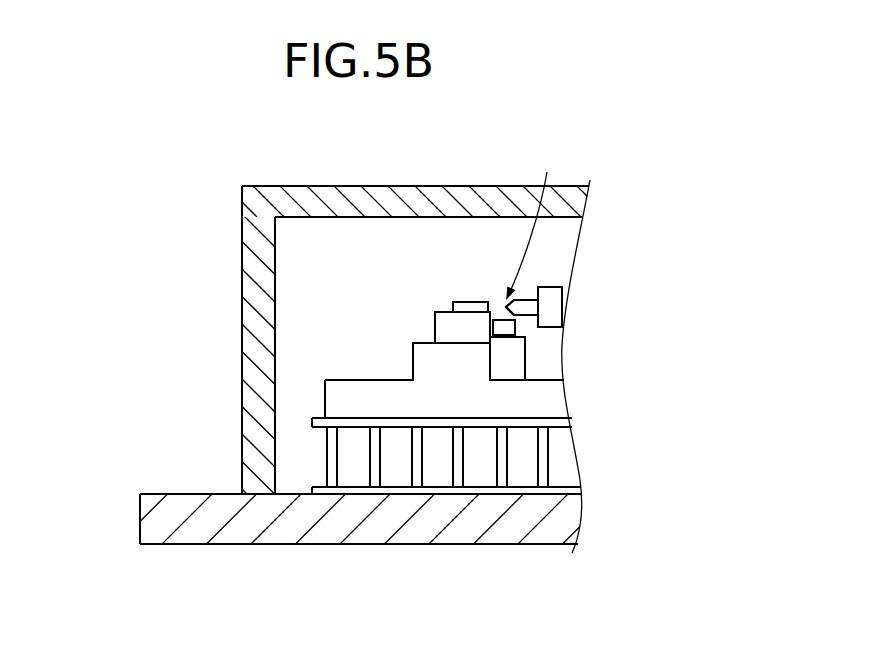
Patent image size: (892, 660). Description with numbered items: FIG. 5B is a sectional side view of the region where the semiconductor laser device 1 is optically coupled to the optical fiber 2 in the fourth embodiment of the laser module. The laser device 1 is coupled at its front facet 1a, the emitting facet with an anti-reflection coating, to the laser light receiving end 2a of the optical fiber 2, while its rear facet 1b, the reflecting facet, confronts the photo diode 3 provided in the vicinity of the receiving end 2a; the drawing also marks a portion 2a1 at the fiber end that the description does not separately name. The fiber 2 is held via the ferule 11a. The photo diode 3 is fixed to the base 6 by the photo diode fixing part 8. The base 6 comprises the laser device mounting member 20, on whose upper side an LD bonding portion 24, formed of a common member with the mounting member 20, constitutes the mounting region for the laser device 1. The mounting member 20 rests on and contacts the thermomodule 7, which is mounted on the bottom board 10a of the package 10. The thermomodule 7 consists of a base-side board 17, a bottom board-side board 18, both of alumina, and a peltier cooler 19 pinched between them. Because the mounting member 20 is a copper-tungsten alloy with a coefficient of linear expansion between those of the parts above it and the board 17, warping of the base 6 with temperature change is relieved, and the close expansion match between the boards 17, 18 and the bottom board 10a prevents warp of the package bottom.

The package 10 is at (247, 216).
The bottom board 10a is at (180, 523).
The base 6 is at (365, 384).
The laser device mounting member 20 is at (335, 402).
The base-side board 17 is at (308, 422).
The thermomodule 7 is at (332, 443).
The peltier cooler 19 is at (347, 457).
The bottom board-side board 18 is at (317, 487).
The photo diode fixing part 8 is at (497, 357).
The LD bonding portion 24 is at (443, 328).
The semiconductor laser device 1 is at (463, 302).
The rear facet 1b is at (453, 305).
The front facet 1a is at (490, 302).
The photo diode 3 is at (498, 320).
The optical fiber 2 is at (525, 303).
The laser light receiving end 2a is at (533, 221).
The nozzle tip 2a1 is at (507, 307).
The ferule 11a is at (549, 293).